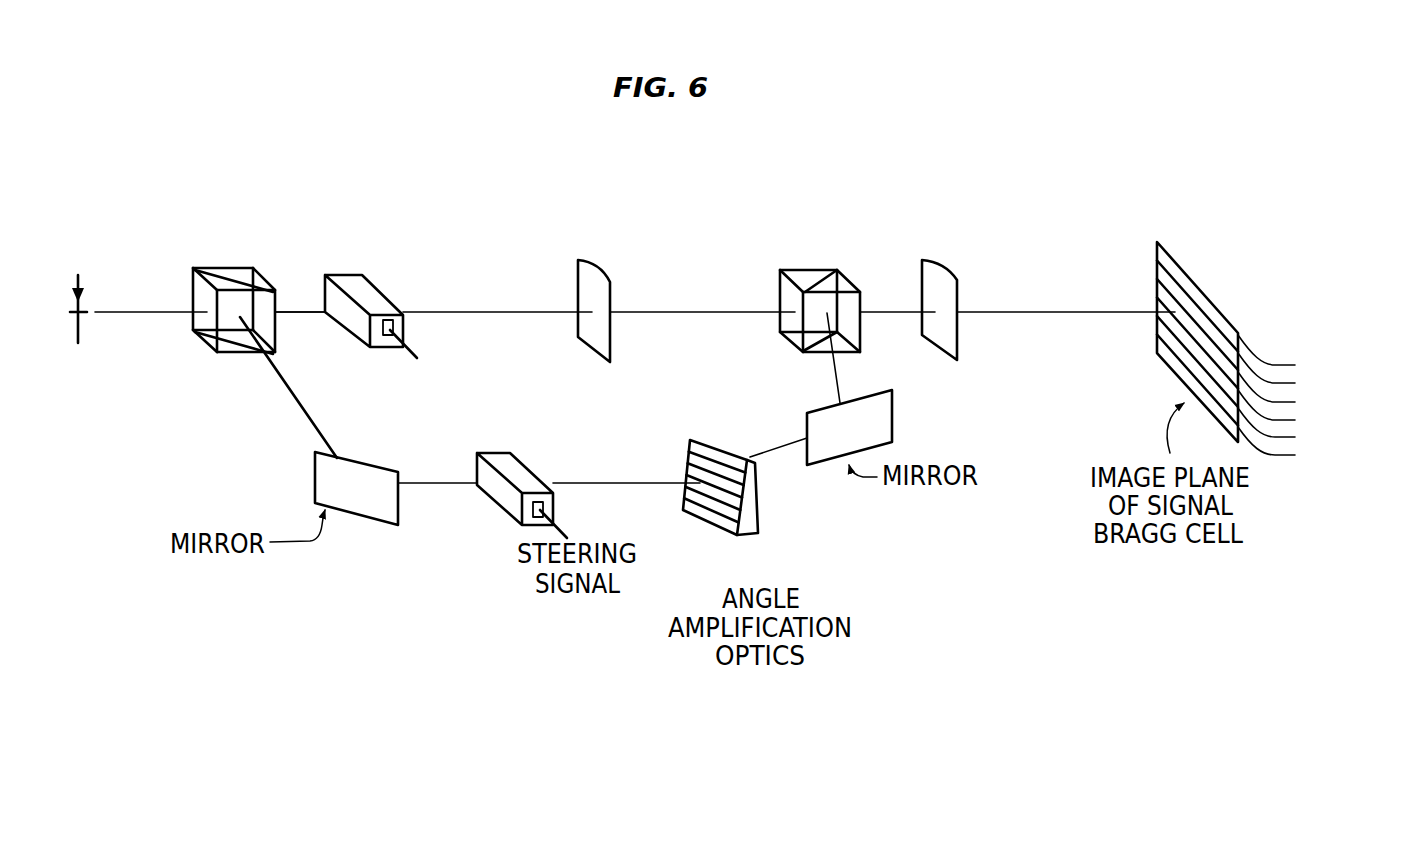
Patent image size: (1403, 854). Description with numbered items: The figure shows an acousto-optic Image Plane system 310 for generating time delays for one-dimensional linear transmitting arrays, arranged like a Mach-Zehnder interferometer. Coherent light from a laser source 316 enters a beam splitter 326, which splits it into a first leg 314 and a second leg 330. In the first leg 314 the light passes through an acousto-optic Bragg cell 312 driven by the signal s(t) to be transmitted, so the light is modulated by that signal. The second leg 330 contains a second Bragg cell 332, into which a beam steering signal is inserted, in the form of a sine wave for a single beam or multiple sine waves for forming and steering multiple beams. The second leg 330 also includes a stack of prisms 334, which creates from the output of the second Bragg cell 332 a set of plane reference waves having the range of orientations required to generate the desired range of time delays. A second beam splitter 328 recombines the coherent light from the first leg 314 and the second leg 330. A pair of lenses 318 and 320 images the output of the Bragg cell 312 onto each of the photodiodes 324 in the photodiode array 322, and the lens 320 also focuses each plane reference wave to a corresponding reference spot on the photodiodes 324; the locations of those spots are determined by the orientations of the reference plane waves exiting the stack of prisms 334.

The acousto-optic Image Plane system 310 is at (217, 162).
The acousto-optic Bragg cell 312 is at (392, 287).
The first leg 314 is at (294, 308).
The laser source 316 is at (76, 276).
The lens 318 is at (603, 275).
The lens 320 is at (948, 268).
The photodiode array 322 is at (1137, 267).
The photodiodes 324 is at (1207, 295).
The beam splitter 326 is at (194, 346).
The beam splitter 328 is at (823, 266).
The second leg 330 is at (287, 407).
The second Bragg cell 332 is at (495, 511).
The stack of prisms 334 is at (718, 538).